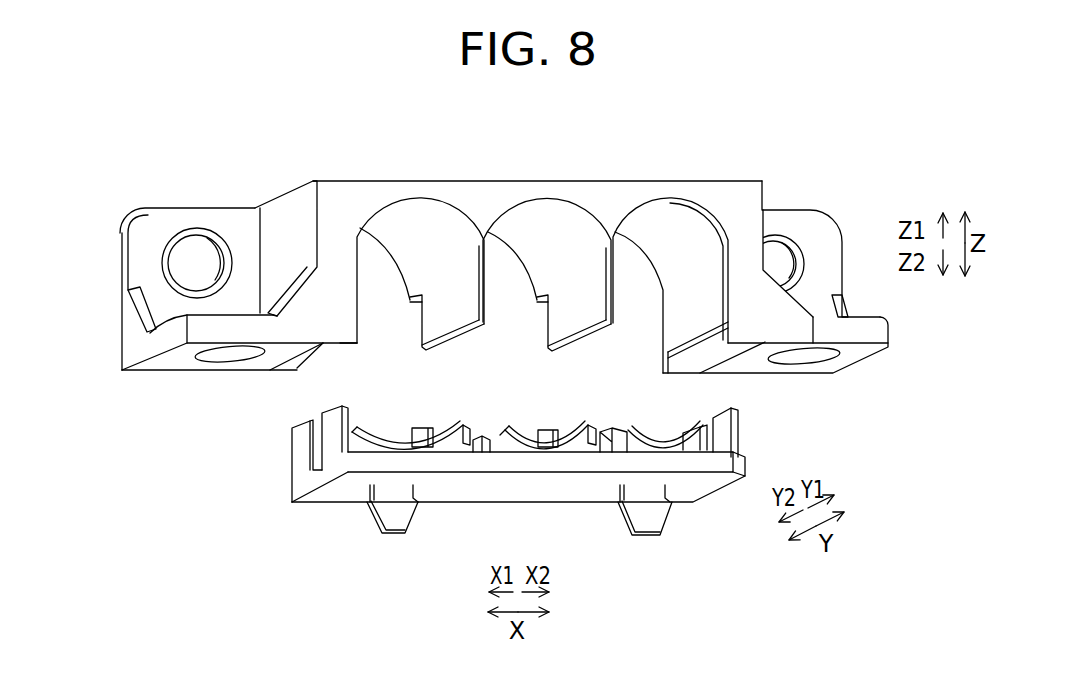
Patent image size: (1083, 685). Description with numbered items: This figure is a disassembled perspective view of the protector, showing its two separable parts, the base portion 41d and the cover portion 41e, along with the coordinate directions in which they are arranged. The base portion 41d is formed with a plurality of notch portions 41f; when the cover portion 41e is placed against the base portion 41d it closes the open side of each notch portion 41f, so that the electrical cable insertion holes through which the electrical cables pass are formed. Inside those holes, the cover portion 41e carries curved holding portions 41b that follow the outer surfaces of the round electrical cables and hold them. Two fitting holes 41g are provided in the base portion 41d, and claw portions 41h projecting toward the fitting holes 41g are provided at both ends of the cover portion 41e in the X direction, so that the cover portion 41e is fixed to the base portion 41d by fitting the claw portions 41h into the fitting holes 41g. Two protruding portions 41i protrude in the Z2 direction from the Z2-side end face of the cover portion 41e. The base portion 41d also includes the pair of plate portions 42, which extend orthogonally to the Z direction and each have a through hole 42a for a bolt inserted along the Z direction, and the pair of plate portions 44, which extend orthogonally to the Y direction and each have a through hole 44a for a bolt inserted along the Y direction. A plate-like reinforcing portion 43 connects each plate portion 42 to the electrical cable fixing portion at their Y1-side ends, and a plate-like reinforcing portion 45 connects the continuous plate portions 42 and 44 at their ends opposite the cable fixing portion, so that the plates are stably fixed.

The holding portion 41b is at (456, 448).
The base portion 41d is at (529, 179).
The cover portion 41e is at (531, 492).
The notch portion 41f is at (413, 205).
The fitting hole 41g is at (325, 344).
The claw portion 41h is at (300, 440).
The protruding portion 41i is at (400, 521).
The plate portion 42 is at (871, 332).
The through hole 42a is at (213, 360).
The reinforcing portion 43 is at (307, 298).
The plate portion 44 is at (155, 225).
The through hole 44a is at (200, 238).
The reinforcing portion 45 is at (136, 303).